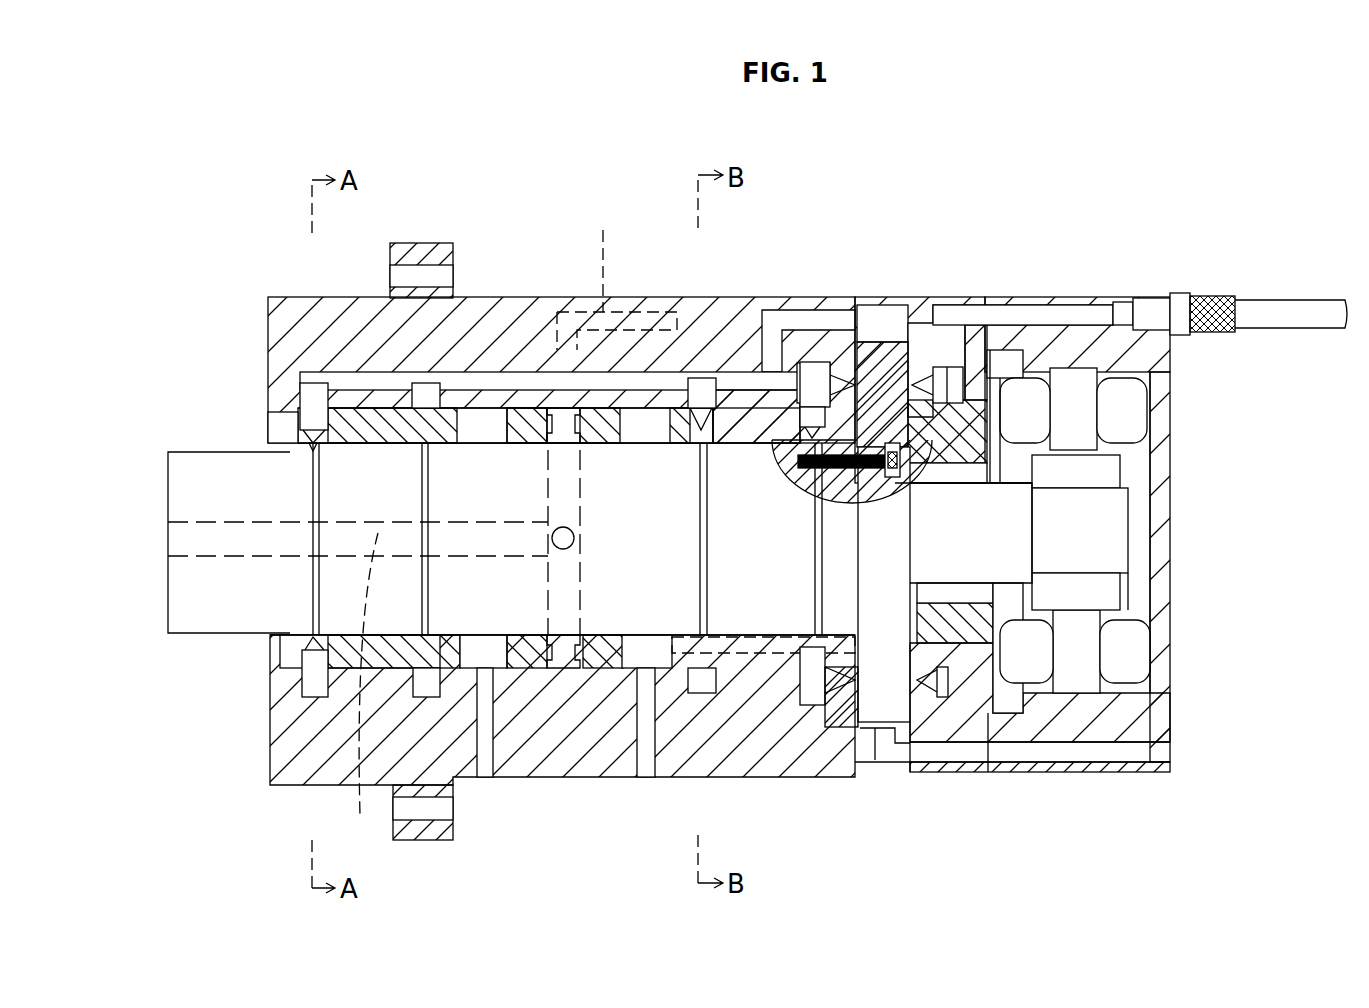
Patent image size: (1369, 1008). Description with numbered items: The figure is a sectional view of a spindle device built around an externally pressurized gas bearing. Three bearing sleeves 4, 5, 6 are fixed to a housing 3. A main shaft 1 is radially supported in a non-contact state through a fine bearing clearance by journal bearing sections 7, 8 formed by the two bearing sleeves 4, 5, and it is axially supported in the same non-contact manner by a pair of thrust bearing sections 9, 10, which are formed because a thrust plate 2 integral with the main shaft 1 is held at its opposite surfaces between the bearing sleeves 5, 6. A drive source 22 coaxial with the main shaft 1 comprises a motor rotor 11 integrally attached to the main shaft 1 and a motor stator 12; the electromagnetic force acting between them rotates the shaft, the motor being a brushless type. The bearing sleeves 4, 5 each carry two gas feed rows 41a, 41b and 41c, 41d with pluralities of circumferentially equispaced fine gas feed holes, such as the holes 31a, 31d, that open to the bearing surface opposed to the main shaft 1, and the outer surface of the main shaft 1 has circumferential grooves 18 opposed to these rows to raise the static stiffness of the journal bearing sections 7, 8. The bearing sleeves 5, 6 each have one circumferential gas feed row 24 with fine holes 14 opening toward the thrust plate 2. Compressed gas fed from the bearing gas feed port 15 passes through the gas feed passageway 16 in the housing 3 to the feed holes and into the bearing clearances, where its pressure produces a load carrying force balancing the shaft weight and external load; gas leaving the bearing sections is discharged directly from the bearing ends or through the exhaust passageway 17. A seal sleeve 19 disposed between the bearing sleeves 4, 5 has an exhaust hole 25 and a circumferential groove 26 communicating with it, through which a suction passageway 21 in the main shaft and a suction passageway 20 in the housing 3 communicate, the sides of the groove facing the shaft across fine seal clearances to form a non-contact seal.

The main shaft 1 is at (185, 486).
The thrust plate 2 is at (878, 705).
The housing 3 is at (368, 300).
The bearing sleeve 4 is at (330, 365).
The bearing sleeve 5 is at (722, 400).
The bearing sleeve 6 is at (955, 330).
The journal bearing section 7 is at (425, 390).
The journal bearing section 8 is at (752, 420).
The thrust bearing section 9 is at (878, 365).
The thrust bearing section 10 is at (928, 355).
The motor rotor 11 is at (1098, 470).
The motor stator 12 is at (1073, 380).
The gas feed holes 14 is at (840, 350).
The bearing gas feed port 15 is at (1205, 300).
The gas feed passageway 16 is at (492, 380).
The exhaust passageway 17 is at (486, 765).
The circumferential grooves 18 is at (312, 590).
The seal sleeve 19 is at (525, 420).
The suction passageway 20 is at (617, 279).
The suction passageway 21 is at (358, 689).
The drive source 22 is at (1130, 586).
The gas feed row 24 is at (808, 710).
The exhaust hole 25 is at (565, 670).
The circumferential groove 26 is at (558, 440).
The gas feed holes 31a is at (300, 432).
The gas feed holes 31d is at (795, 445).
The gas feed row 41a is at (310, 380).
The gas feed row 41b is at (427, 640).
The gas feed row 41c is at (700, 395).
The gas feed row 41d is at (808, 380).